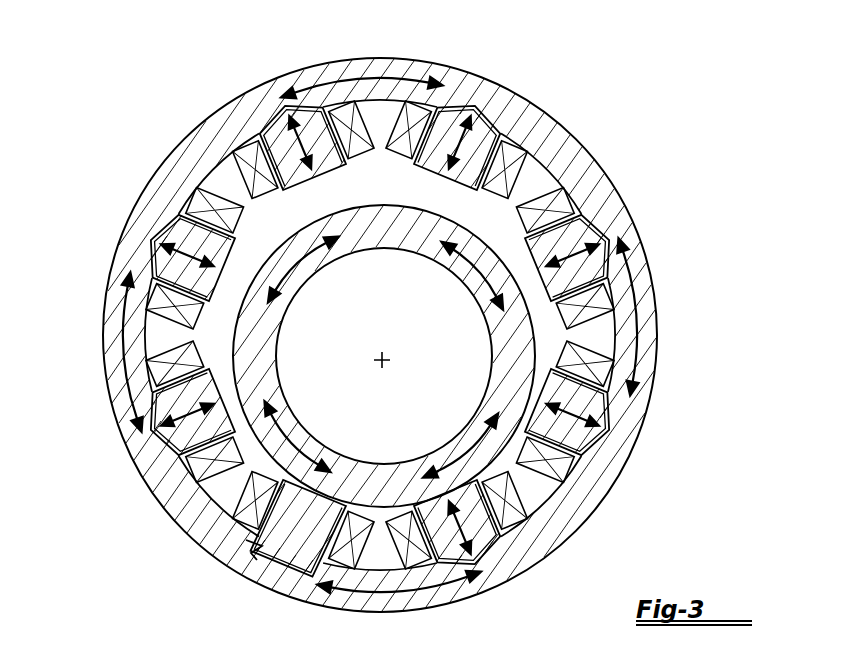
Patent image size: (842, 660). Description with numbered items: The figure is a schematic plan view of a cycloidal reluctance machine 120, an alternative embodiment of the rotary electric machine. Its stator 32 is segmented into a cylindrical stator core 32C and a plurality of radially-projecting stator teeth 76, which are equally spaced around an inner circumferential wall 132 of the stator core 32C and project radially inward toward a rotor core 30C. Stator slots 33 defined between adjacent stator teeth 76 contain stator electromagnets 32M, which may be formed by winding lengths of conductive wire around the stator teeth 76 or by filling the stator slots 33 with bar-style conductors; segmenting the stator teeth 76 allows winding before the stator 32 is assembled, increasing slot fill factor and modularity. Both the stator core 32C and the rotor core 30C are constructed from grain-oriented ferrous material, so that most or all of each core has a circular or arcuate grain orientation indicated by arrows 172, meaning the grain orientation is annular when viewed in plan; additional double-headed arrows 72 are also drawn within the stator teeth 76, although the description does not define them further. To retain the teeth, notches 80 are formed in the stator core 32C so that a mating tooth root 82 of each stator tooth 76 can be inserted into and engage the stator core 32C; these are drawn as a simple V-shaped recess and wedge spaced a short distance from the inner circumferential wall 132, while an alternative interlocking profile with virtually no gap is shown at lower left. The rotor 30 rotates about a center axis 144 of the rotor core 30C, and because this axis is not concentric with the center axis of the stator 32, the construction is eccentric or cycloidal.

The cycloidal reluctance machine 120 is at (553, 57).
The stator 32 is at (710, 180).
The inner circumferential wall 132 is at (217, 176).
The stator slots 33 is at (548, 180).
The stator teeth 76 is at (283, 137).
The stator electromagnets 32M is at (245, 152).
The stator core 32C is at (556, 122).
The magnetization direction arrow 72 is at (192, 250).
The notches 80 is at (153, 255).
The tooth root 82 is at (158, 262).
The arrows 172 is at (357, 82).
The rotor 30 is at (600, 335).
The rotor core 30C is at (500, 342).
The center axis 144 is at (375, 360).